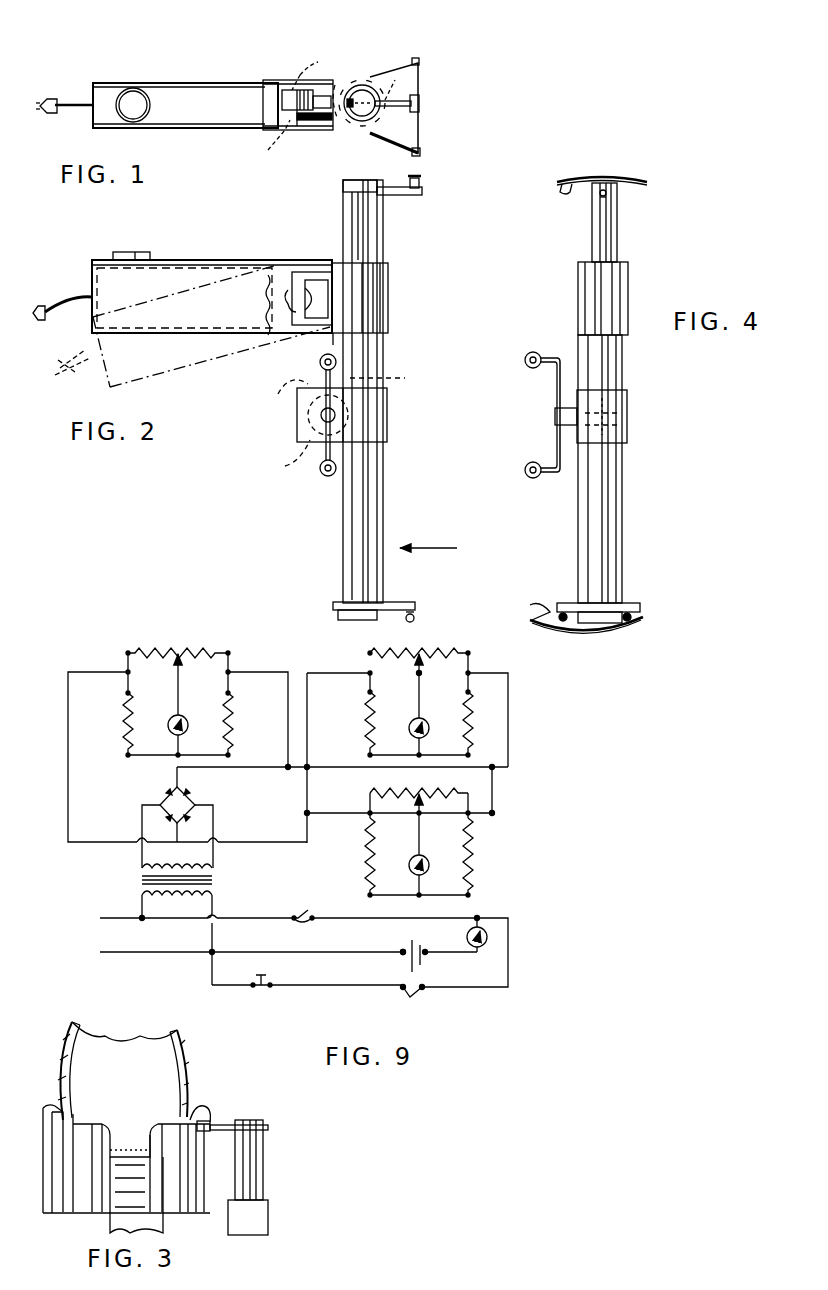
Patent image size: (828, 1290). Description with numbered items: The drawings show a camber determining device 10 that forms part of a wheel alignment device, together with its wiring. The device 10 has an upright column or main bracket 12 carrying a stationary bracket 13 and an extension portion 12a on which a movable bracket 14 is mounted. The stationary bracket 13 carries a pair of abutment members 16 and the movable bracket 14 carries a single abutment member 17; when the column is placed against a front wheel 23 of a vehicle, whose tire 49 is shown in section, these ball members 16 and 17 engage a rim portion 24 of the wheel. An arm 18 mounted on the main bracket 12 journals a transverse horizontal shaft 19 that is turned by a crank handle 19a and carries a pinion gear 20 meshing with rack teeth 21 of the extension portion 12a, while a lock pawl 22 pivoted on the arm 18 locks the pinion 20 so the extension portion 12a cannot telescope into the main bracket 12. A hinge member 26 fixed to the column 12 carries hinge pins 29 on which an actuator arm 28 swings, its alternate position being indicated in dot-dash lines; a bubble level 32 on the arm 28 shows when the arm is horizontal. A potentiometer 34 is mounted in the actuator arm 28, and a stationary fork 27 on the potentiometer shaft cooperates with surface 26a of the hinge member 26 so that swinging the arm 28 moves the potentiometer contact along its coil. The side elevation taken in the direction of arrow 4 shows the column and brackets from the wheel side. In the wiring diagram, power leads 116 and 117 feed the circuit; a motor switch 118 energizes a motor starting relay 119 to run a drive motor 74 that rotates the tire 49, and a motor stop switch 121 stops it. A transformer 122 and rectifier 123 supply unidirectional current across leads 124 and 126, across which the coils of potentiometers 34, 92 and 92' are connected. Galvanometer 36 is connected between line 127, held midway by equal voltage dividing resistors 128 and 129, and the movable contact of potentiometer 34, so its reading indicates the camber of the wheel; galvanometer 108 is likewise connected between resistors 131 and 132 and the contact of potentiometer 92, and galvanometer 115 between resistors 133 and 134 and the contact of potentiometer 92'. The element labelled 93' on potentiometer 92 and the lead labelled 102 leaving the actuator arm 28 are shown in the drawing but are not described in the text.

In FIG. 2, the camber determining device 10 is at (431, 510).
In FIG. 1, the main bracket 12 is at (362, 85).
In FIG. 2, the main bracket 12 is at (383, 360).
In FIG. 4, the main bracket 12 is at (618, 497).
In FIG. 1, the extension portion 12a is at (380, 80).
In FIG. 2, the extension portion 12a is at (378, 243).
In FIG. 4, the extension portion 12a is at (613, 240).
In FIG. 3, the extension portion 12a is at (250, 1156).
In FIG. 1, the stationary bracket 13 is at (398, 70).
In FIG. 2, the stationary bracket 13 is at (395, 603).
In FIG. 4, the stationary bracket 13 is at (625, 605).
In FIG. 1, the movable bracket 14 is at (410, 98).
In FIG. 2, the movable bracket 14 is at (400, 195).
In FIG. 4, the movable bracket 14 is at (608, 196).
In FIG. 3, the movable bracket 14 is at (225, 1125).
In FIG. 1, the abutment members 16 is at (419, 60).
In FIG. 2, the abutment members 16 is at (412, 622).
In FIG. 4, the abutment members 16 is at (632, 618).
In FIG. 1, the abutment member 17 is at (420, 103).
In FIG. 2, the abutment member 17 is at (416, 176).
In FIG. 4, the abutment member 17 is at (604, 190).
In FIG. 3, the abutment member 17 is at (212, 1118).
In FIG. 2, the arm 18 is at (388, 420).
In FIG. 4, the arm 18 is at (614, 402).
In FIG. 2, the shaft 19 is at (321, 418).
In FIG. 4, the shaft 19 is at (628, 415).
In FIG. 2, the crank handle 19a is at (328, 478).
In FIG. 4, the crank handle 19a is at (545, 338).
In FIG. 2, the pinion gear 20 is at (279, 457).
In FIG. 4, the pinion gear 20 is at (628, 430).
In FIG. 2, the rack teeth 21 is at (390, 378).
In FIG. 2, the lock pawl 22 is at (278, 390).
In FIG. 4, the front wheel 23 is at (560, 190).
In FIG. 3, the front wheel 23 is at (78, 1138).
In FIG. 4, the rim portion 24 is at (635, 180).
In FIG. 3, the rim portion 24 is at (205, 1105).
In FIG. 1, the hinge member 26 is at (347, 128).
In FIG. 2, the hinge member 26 is at (388, 296).
In FIG. 4, the hinge member 26 is at (603, 298).
In FIG. 1, the surface 26a is at (335, 88).
In FIG. 2, the surface 26a is at (325, 340).
In FIG. 1, the stationary fork 27 is at (318, 120).
In FIG. 2, the stationary fork 27 is at (305, 272).
In FIG. 1, the actuator arm 28 is at (182, 83).
In FIG. 2, the actuator arm 28 is at (190, 260).
In FIG. 1, the hinge pins 29 is at (296, 92).
In FIG. 1, the bubble level 32 is at (133, 88).
In FIG. 2, the bubble level 32 is at (140, 252).
In FIG. 1, the potentiometer 34 is at (290, 90).
In FIG. 2, the potentiometer 34 is at (285, 285).
In FIG. 9, the potentiometer 34 is at (418, 792).
In FIG. 9, the galvanometer 36 is at (429, 866).
In FIG. 3, the tire 49 is at (195, 1052).
In FIG. 9, the motor 74 is at (467, 937).
In FIG. 9, the potentiometer 92 is at (419, 651).
In FIG. 9, the potentiometer 92' is at (181, 644).
In FIG. 9, the tap 93' is at (437, 673).
In FIG. 1, the power cord 102 is at (62, 103).
In FIG. 2, the power cord 102 is at (60, 305).
In FIG. 9, the galvanometer 108 is at (427, 735).
In FIG. 9, the galvanometer 115 is at (188, 727).
In FIG. 9, the power lead 116 is at (118, 918).
In FIG. 9, the power lead 117 is at (118, 952).
In FIG. 9, the motor switch 118 is at (268, 970).
In FIG. 9, the motor starting relay 119 is at (408, 962).
In FIG. 9, the motor stop switch 121 is at (305, 912).
In FIG. 9, the transformer 122 is at (214, 882).
In FIG. 9, the rectifier 123 is at (192, 800).
In FIG. 9, the lead 124 is at (112, 842).
In FIG. 9, the lead 126 is at (240, 768).
In FIG. 9, the line 127 is at (422, 885).
In FIG. 9, the voltage dividing resistor 128 is at (366, 858).
In FIG. 9, the voltage dividing resistor 129 is at (472, 865).
In FIG. 9, the voltage dividing resistor 131 is at (366, 712).
In FIG. 9, the voltage dividing resistor 132 is at (473, 726).
In FIG. 9, the voltage dividing resistor 133 is at (125, 718).
In FIG. 9, the voltage dividing resistor 134 is at (232, 726).
In FIG. 2, the arrow 4 is at (428, 537).